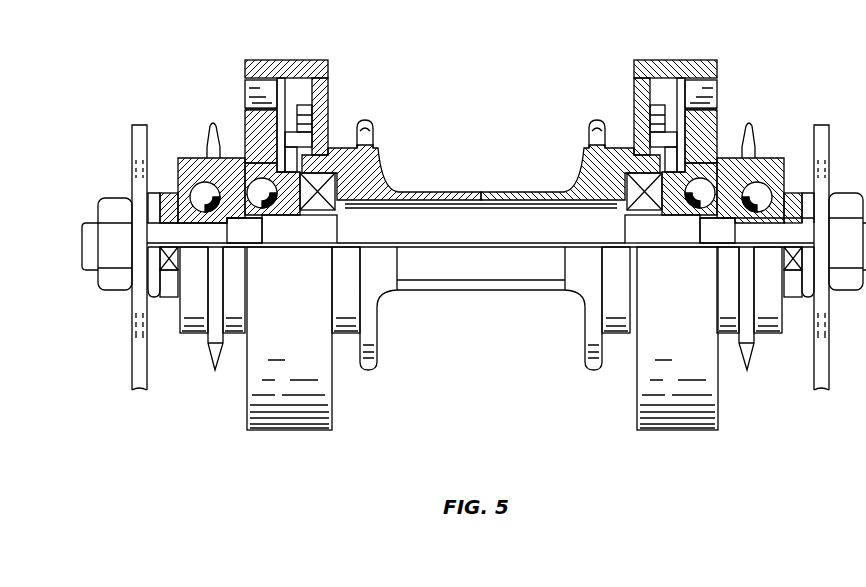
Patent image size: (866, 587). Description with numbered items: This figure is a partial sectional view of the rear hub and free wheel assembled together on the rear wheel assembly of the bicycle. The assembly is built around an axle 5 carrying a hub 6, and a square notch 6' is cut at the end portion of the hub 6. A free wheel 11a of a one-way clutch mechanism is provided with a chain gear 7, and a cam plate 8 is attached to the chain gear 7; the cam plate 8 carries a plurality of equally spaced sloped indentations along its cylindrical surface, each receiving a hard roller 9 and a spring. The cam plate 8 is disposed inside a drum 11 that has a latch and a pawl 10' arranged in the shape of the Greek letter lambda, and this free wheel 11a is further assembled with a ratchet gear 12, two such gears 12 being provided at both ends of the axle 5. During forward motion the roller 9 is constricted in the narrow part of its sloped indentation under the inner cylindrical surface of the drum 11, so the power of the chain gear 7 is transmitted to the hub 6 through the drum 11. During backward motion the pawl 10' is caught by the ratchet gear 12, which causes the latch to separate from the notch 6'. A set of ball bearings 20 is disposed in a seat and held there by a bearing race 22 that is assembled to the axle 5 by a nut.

The axle 5 is at (92, 222).
The bearing race 22 is at (118, 288).
The ball bearings 20 is at (192, 158).
The chain gear 7 is at (208, 130).
The cam plate 8 is at (245, 135).
The hard roller 9 is at (245, 92).
The drum 11 is at (270, 60).
The free wheel 11a is at (320, 60).
The pawl 10' is at (481, 125).
The hub 6 is at (481, 217).
The square notch 6' is at (481, 245).
The ratchet gear 12 is at (278, 216).